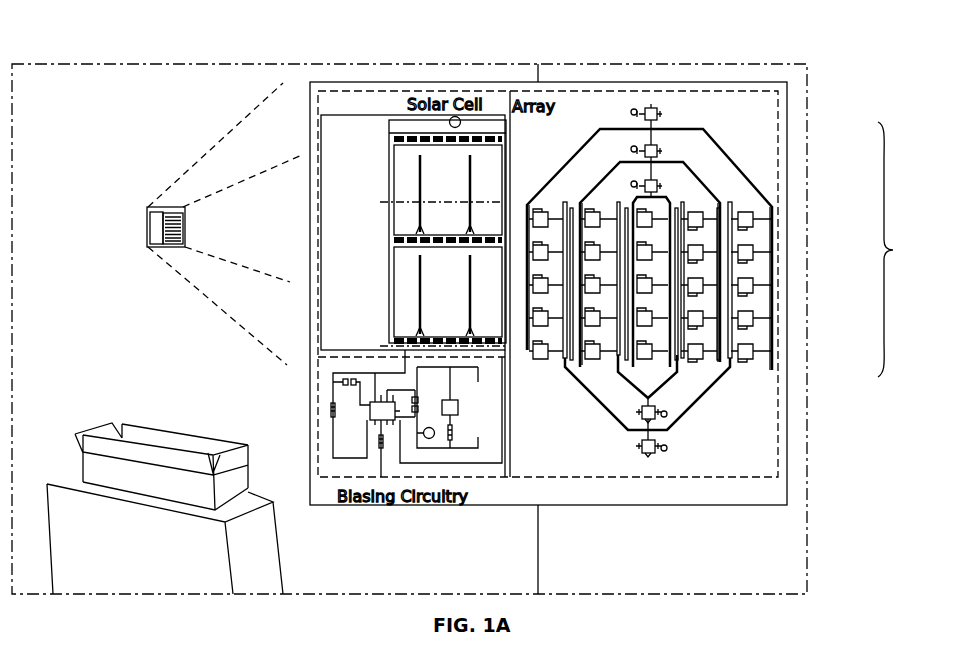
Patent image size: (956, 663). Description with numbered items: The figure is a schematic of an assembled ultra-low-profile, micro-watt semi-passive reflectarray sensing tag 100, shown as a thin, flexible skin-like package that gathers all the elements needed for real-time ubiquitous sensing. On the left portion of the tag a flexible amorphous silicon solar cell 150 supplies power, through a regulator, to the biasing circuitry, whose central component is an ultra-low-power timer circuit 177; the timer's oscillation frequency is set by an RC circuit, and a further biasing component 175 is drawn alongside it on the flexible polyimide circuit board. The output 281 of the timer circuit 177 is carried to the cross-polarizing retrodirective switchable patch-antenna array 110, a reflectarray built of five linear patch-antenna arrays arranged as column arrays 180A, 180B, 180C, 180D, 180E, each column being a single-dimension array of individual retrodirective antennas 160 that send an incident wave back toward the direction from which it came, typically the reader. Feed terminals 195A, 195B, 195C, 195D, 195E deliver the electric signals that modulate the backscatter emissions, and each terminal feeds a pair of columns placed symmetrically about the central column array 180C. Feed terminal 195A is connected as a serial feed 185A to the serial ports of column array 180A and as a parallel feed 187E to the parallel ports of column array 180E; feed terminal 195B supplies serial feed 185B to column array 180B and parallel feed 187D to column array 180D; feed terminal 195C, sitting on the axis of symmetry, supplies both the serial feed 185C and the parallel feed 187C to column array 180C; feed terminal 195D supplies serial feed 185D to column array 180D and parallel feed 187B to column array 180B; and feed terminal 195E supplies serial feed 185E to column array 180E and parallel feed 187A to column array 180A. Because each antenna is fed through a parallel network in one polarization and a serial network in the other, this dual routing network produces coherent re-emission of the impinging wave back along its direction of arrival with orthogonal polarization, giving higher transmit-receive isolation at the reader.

The semi-passive tag 100 is at (147, 223).
The antenna array 110 is at (904, 249).
The solar cell 150 is at (397, 158).
The retrodirective antenna 160 is at (563, 362).
The biasing circuit component 175 is at (458, 408).
The timer circuit 177 is at (370, 410).
The column array 180A is at (533, 286).
The column array 180B is at (640, 293).
The column array 180C is at (692, 212).
The column array 180D is at (755, 213).
The column array 180E is at (756, 287).
The serial feed 185A is at (528, 205).
The serial feed 185B is at (580, 202).
The serial feed 185C is at (600, 182).
The serial feed 185D is at (733, 368).
The serial feed 185E is at (774, 352).
The parallel feed 187A is at (627, 295).
The parallel feed 187B is at (628, 432).
The parallel feed 187C is at (708, 392).
The parallel feed 187D is at (720, 200).
The parallel feed 187E is at (773, 205).
The feed terminal 195A is at (643, 150).
The feed terminal 195B is at (660, 186).
The feed terminal 195C is at (631, 111).
The feed terminal 195D is at (658, 420).
The feed terminal 195E is at (659, 451).
The output 281 is at (553, 362).